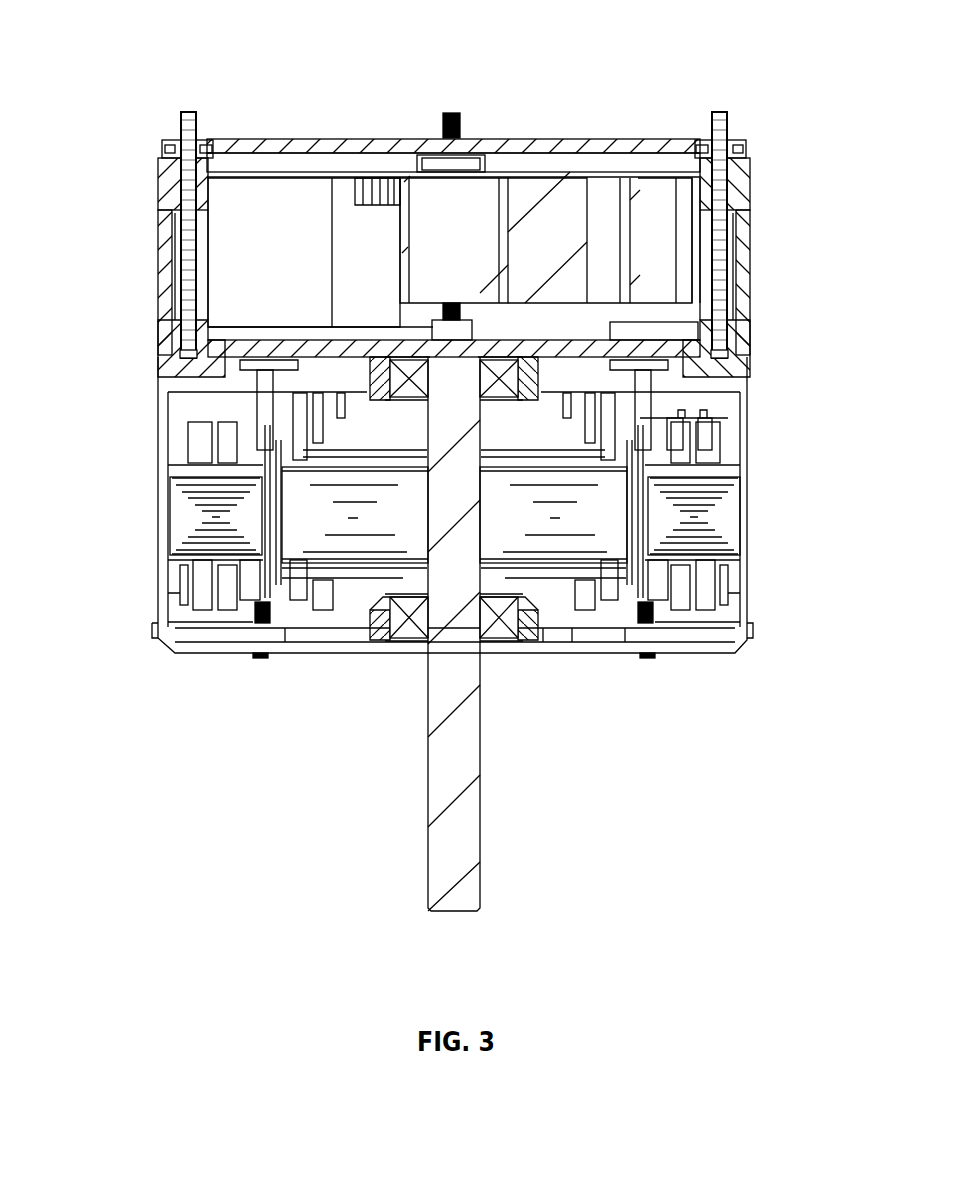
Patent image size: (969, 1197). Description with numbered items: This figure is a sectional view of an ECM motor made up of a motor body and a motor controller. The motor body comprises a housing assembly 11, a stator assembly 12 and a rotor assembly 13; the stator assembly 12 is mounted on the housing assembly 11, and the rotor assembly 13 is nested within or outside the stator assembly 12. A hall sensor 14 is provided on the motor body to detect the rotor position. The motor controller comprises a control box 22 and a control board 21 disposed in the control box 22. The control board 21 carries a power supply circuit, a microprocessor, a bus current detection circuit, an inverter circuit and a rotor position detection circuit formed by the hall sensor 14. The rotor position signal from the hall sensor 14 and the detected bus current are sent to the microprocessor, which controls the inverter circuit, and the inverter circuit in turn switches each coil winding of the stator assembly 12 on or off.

The housing assembly 11 is at (743, 605).
The stator assembly 12 is at (707, 517).
The rotor assembly 13 is at (383, 520).
The hall sensor 14 is at (665, 418).
The control board 21 is at (327, 175).
The control box 22 is at (165, 242).